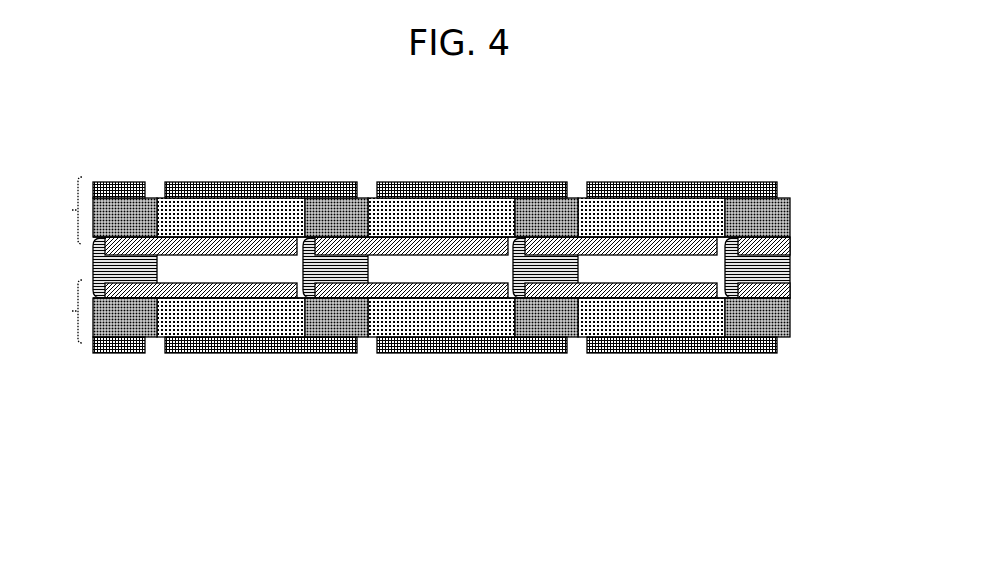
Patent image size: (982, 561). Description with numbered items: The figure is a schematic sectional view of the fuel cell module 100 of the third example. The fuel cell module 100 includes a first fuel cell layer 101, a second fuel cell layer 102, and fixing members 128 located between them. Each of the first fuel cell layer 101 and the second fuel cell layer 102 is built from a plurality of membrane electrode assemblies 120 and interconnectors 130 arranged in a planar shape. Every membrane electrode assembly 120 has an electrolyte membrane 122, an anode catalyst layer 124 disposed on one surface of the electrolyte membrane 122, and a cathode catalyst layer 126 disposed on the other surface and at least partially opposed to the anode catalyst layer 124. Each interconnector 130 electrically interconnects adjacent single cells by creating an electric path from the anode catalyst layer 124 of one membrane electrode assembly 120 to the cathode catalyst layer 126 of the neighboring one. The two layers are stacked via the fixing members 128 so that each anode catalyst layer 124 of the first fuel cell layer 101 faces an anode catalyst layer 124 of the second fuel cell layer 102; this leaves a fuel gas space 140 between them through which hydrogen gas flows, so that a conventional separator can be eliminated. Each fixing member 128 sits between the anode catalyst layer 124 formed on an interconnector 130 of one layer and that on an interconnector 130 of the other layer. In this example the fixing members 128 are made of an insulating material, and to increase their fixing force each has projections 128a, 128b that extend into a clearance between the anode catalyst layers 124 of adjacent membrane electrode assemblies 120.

The fuel cell module 100 is at (434, 321).
The first fuel cell layer 101 is at (60, 210).
The second fuel cell layer 102 is at (60, 311).
The membrane electrode assembly 120 is at (450, 262).
The electrolyte membrane 122 is at (228, 208).
The anode catalyst layer 124 is at (182, 237).
The cathode catalyst layer 126 is at (195, 183).
The fixing member 128 is at (467, 362).
The projection 128a is at (318, 255).
The projection 128b is at (330, 298).
The interconnector 130 is at (330, 198).
The fuel gas space 140 is at (445, 268).